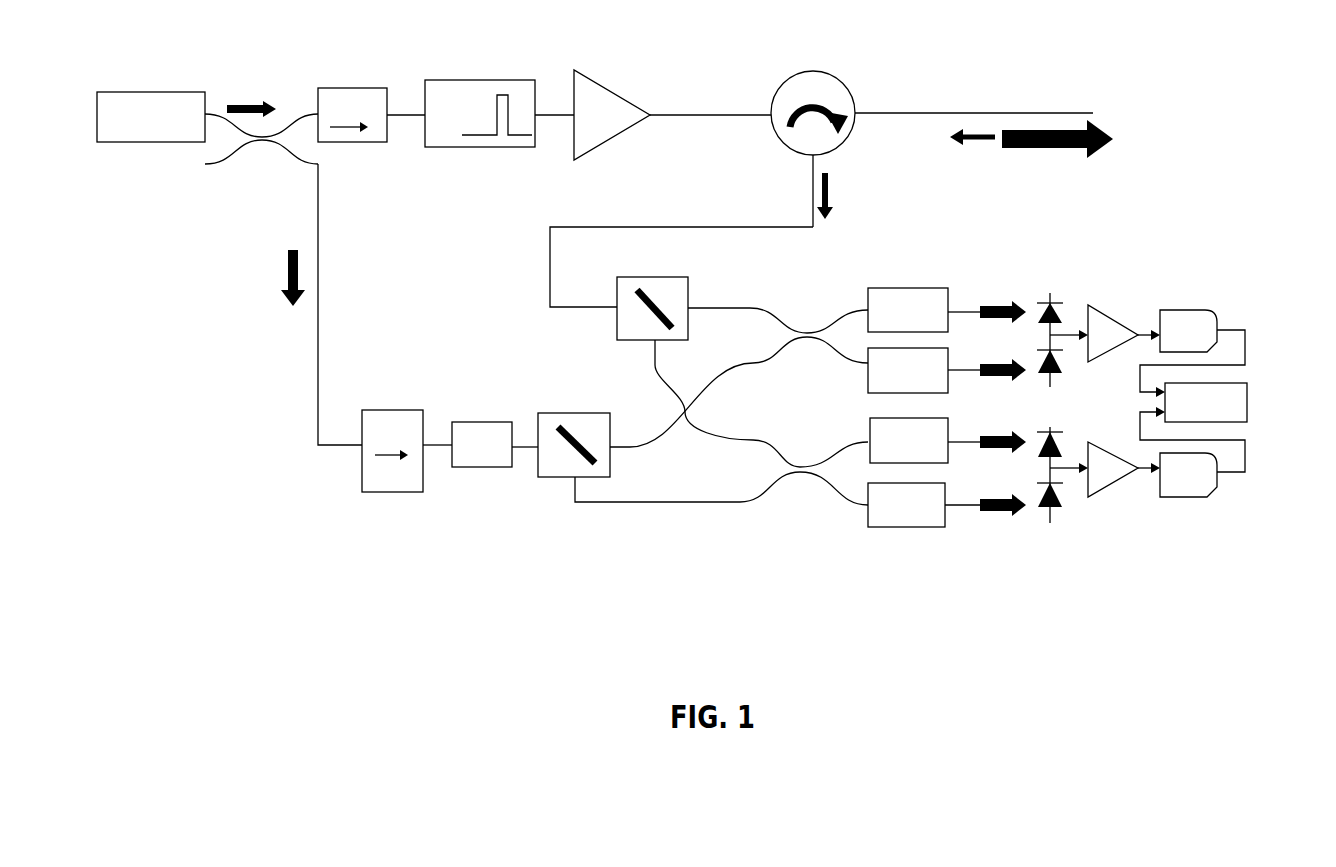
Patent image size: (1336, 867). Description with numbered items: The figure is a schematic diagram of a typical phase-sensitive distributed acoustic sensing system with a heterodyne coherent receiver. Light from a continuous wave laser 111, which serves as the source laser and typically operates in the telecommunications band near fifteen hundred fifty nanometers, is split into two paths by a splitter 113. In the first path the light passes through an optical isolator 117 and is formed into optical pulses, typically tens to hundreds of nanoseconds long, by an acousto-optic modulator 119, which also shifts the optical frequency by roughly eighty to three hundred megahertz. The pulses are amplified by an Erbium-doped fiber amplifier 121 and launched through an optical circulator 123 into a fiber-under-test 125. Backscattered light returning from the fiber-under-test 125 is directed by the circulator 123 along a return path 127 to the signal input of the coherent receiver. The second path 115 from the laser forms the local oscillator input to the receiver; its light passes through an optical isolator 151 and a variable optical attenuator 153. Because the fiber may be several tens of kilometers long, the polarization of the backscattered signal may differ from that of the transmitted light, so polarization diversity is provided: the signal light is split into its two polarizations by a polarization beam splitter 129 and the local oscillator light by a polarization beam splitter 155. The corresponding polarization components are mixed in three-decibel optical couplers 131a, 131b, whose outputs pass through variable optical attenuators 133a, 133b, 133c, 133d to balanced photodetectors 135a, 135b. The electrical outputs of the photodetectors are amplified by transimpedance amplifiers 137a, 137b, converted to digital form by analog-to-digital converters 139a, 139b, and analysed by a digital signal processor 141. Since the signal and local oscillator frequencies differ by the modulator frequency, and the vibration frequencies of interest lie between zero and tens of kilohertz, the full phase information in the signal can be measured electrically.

The continuous wave (CW) laser 111 is at (150, 92).
The splitter 113 is at (246, 168).
The second path 115 is at (322, 245).
The optical isolator 117 is at (345, 88).
The acousto-optic modulator (AOM) 119 is at (475, 80).
The Erbium-doped fiber amplifier (EDFA) 121 is at (605, 90).
The optical circulator 123 is at (822, 72).
The fiber-under-test 125 is at (880, 111).
The return optical path 127 is at (648, 226).
The polarization beam splitter 129 is at (615, 318).
The 3 dB optical coupler 131a is at (810, 301).
The 3 dB optical coupler 131b is at (804, 440).
The variable optical attenuator 133a is at (885, 288).
The variable optical attenuator 133b is at (948, 391).
The variable optical attenuator 133c is at (950, 461).
The variable optical attenuator 133d is at (903, 527).
The balanced photodetector 135a is at (1077, 284).
The balanced photodetector 135b is at (1074, 424).
The transimpedance amplifier (TIA) 137a is at (1108, 320).
The transimpedance amplifier (TIA) 137b is at (1108, 487).
The analog-to-digital converter (ADC) 139a is at (1195, 310).
The analog-to-digital converter (ADC) 139b is at (1190, 497).
The digital signal processor (DSP) 141 is at (1248, 407).
The optical isolator 151 is at (392, 410).
The variable optical attenuator 153 is at (478, 422).
The polarization beam splitter 155 is at (575, 413).